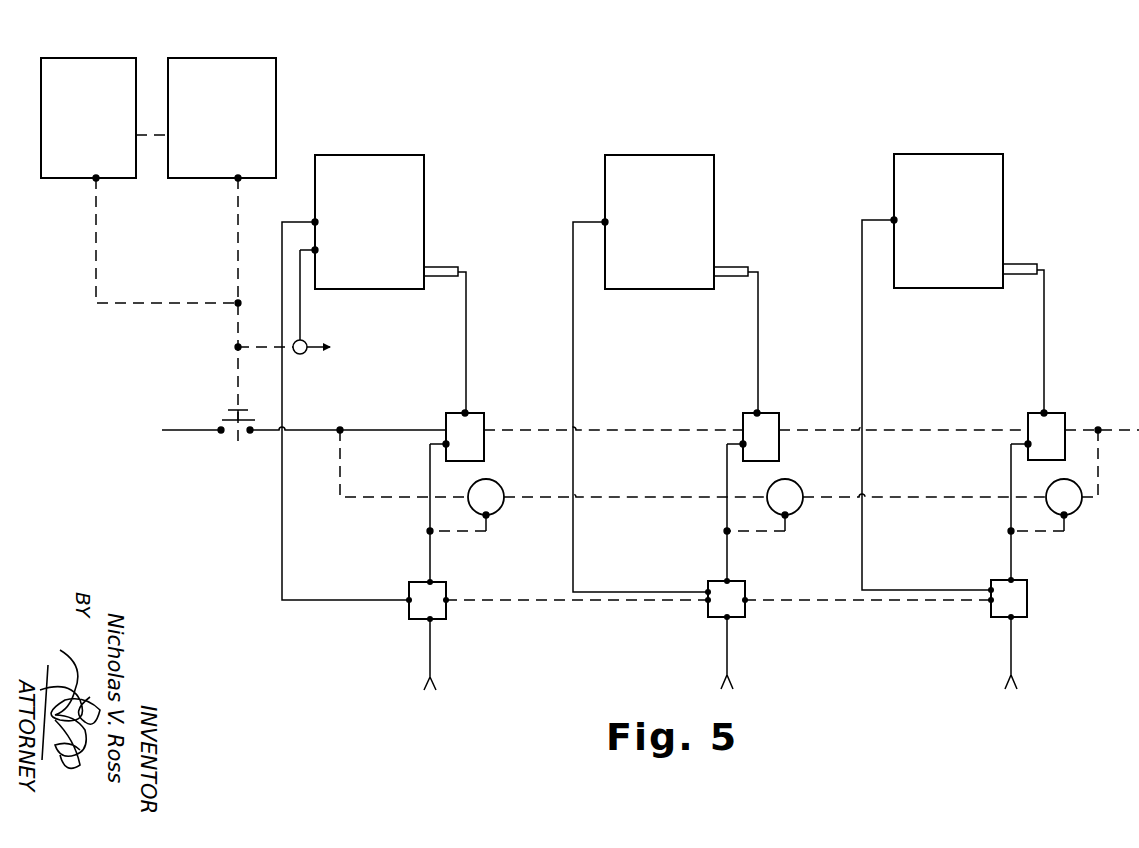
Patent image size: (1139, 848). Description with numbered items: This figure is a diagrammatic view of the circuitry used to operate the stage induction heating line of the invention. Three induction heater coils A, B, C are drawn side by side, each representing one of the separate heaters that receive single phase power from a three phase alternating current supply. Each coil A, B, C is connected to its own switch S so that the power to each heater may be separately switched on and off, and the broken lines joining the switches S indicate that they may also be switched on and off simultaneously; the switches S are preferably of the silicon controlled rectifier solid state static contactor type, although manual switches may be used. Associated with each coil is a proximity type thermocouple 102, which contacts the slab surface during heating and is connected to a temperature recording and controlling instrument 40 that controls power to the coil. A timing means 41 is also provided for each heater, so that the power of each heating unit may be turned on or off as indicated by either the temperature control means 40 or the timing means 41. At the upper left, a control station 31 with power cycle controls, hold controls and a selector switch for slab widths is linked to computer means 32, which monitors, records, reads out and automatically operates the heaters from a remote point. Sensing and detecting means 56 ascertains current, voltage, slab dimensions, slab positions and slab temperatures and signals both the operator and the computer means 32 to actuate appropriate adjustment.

The control station 31 is at (88, 62).
The computer means 32 is at (237, 62).
The sensing and detecting means 56 is at (300, 354).
The thermocouple 102 is at (442, 272).
The temperature recording and controlling instrument 40 is at (473, 420).
The timing means 41 is at (490, 488).
The coil of first induction heater A is at (369, 161).
The coil of second induction heater B is at (667, 157).
The coil of third induction heater C is at (939, 160).
The switch S is at (435, 593).